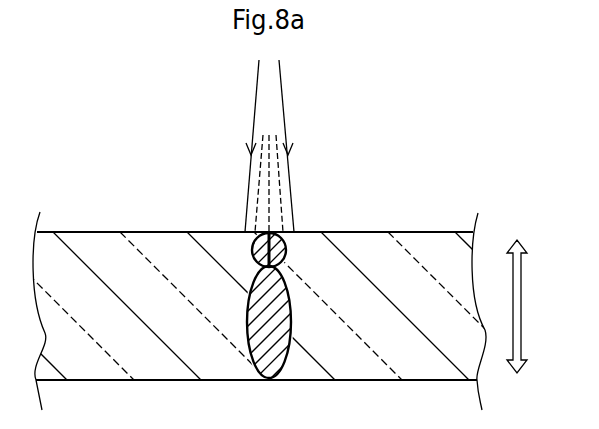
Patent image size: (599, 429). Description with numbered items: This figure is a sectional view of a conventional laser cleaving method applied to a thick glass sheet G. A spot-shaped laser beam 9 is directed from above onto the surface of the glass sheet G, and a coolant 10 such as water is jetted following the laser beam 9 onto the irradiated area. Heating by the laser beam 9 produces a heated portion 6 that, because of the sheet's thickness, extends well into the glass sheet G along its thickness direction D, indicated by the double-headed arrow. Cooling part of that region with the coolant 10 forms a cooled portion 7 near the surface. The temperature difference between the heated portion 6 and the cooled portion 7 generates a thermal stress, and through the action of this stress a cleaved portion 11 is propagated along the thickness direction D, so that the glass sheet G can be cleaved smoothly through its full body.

The laser beam 9 is at (257, 100).
The coolant 10 is at (260, 178).
The cleaved portion 11 is at (252, 245).
The cooled portion 7 is at (287, 250).
The glass sheet G is at (368, 248).
The heated portion 6 is at (290, 362).
The thickness direction D is at (517, 308).